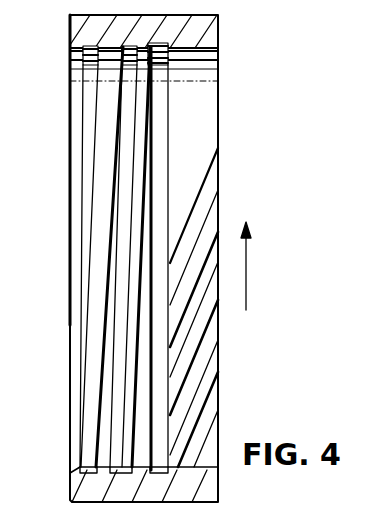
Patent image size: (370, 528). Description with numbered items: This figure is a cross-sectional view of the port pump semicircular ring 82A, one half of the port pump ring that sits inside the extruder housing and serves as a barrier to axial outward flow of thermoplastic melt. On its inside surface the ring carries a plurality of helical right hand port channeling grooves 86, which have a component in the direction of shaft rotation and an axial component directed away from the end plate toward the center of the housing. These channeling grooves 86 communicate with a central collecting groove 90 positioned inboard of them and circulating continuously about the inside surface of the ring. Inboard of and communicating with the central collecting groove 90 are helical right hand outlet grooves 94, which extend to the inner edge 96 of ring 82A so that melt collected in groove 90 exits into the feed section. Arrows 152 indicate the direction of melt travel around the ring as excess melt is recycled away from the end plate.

The port pump semicircular ring 82A is at (72, 489).
The port channeling grooves 86 is at (138, 262).
The central collecting groove 90 is at (167, 131).
The helical right hand outlet grooves 94 is at (200, 297).
The inner edge 96 is at (218, 142).
The arrows 152 is at (248, 284).